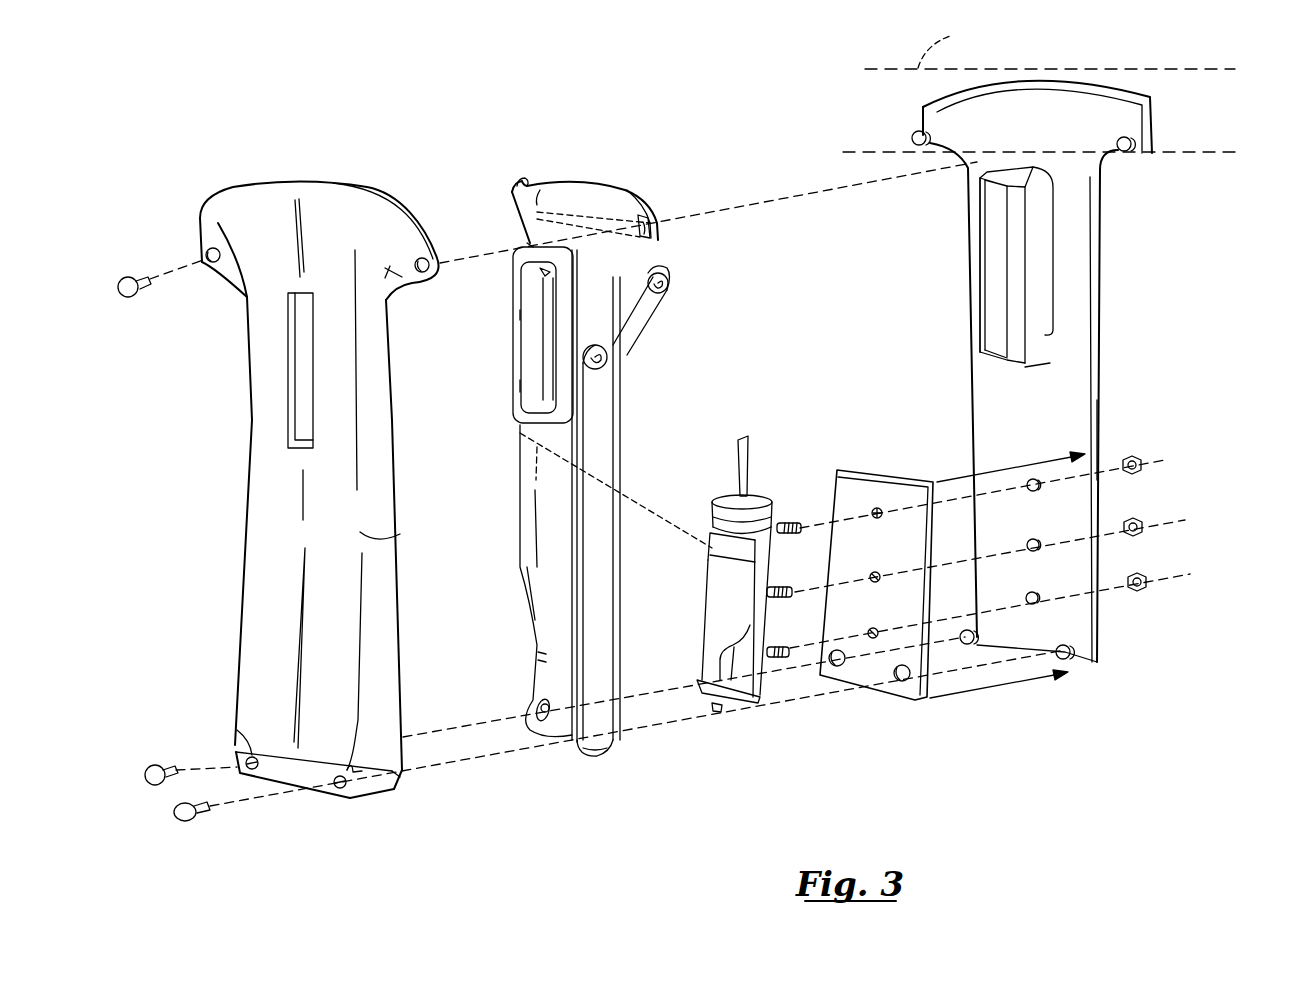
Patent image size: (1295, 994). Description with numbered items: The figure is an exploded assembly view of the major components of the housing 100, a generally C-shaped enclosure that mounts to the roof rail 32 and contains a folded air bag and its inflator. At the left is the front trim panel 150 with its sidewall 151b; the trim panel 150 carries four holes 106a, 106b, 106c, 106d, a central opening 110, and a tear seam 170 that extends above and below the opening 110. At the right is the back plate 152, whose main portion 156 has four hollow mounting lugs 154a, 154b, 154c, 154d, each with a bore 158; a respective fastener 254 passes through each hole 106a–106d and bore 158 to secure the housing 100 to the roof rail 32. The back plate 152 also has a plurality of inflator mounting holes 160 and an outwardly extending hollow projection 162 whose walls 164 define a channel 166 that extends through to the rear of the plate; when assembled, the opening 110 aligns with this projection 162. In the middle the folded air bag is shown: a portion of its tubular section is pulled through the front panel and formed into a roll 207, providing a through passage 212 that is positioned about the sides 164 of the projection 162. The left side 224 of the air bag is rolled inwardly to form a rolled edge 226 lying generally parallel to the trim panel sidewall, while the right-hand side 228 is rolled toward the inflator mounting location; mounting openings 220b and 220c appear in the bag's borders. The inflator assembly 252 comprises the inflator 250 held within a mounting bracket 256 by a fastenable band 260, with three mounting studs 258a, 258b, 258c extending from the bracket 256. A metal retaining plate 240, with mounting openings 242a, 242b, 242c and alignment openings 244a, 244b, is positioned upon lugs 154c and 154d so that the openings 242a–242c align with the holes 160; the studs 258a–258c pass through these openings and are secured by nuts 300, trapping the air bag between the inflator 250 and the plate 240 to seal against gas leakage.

The roof rail 32 is at (1050, 47).
The housing 100 is at (294, 488).
The hole 106a is at (210, 253).
The hole 106b is at (421, 272).
The hole 106c is at (250, 752).
The hole 106d is at (342, 787).
The opening 110 is at (300, 393).
The trim panel 150 is at (257, 566).
The sidewall 151b is at (400, 534).
The back plate 152 is at (1047, 432).
The mounting lug 154a is at (910, 133).
The mounting lug 154b is at (1135, 140).
The mounting lug 154c is at (977, 647).
The mounting lug 154d is at (1093, 663).
The main portion 156 is at (1033, 390).
The bore 158 is at (1017, 153).
The inflator mounting holes 160 is at (1040, 484).
The hollow projection 162 is at (1037, 323).
The walls 164 is at (1037, 280).
The channel 166 is at (997, 255).
The tear seam 170 is at (303, 222).
The roll 207 is at (557, 303).
The through passage 212 is at (547, 337).
The mounting opening 220b is at (643, 222).
The mounting opening 220c is at (533, 700).
The left side of the air bag 224 is at (510, 190).
The folded or rolled edge 226 is at (525, 180).
The right-hand side of the air bag 228 is at (628, 348).
The retaining plate 240 is at (939, 574).
The mounting opening 242a is at (878, 508).
The mounting opening 242b is at (877, 572).
The mounting opening 242c is at (876, 628).
The alignment opening 244a is at (832, 670).
The alignment opening 244b is at (931, 699).
The inflator 250 is at (732, 602).
The inflator assembly 252 is at (702, 481).
The fastener 254 is at (136, 294).
The mounting bracket 256 is at (744, 683).
The mounting stud 258a is at (790, 522).
The mounting stud 258b is at (780, 588).
The mounting stud 258c is at (778, 647).
The band 260 is at (710, 532).
The nuts 300 is at (1135, 458).